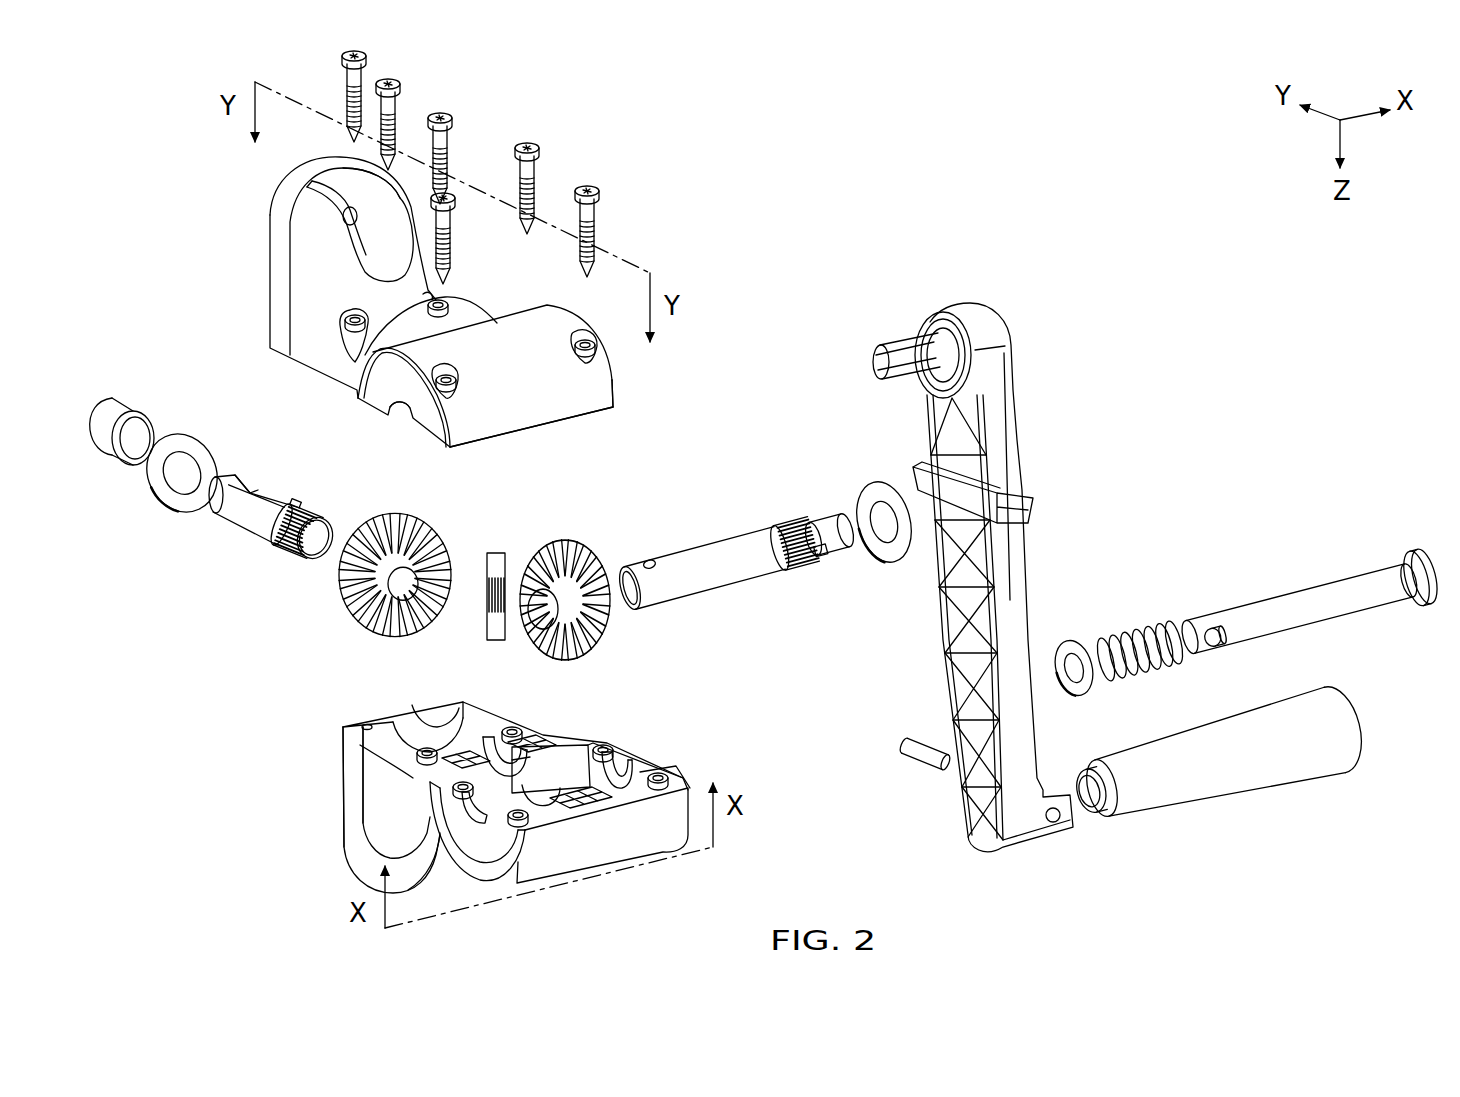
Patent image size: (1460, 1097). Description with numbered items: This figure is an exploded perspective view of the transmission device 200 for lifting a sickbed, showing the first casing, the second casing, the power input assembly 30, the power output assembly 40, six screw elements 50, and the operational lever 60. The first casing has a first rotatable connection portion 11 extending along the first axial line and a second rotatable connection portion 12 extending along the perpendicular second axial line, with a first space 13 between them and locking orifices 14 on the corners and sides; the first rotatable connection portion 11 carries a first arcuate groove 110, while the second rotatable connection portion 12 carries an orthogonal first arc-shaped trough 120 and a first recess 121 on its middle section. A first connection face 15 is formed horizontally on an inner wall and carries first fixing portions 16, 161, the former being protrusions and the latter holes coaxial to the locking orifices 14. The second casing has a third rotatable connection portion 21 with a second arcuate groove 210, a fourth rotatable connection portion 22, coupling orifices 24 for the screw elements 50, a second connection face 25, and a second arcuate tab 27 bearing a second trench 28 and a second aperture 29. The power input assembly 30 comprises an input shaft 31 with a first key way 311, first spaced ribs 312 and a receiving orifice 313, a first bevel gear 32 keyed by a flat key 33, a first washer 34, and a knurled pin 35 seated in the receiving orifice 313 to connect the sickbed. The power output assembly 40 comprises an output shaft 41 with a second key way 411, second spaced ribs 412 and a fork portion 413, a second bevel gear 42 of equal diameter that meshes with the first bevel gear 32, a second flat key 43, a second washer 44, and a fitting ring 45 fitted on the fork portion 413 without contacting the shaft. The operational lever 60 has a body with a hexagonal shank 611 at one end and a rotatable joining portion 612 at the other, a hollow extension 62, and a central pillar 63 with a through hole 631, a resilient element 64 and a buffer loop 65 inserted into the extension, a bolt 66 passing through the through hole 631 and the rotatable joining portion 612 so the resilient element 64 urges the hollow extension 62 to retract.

The transmission device 200 is at (750, 283).
The screw elements 50 is at (550, 162).
The fourth rotatable connection portion 22 is at (417, 333).
The second trench 28 is at (323, 232).
The second arcuate tab 27 is at (367, 257).
The second aperture 29 is at (347, 180).
The third rotatable connection portion 21 is at (540, 330).
The coupling orifices 24 is at (612, 383).
The second connection face 25 is at (570, 420).
The second arcuate groove 210 is at (413, 414).
The power output assembly 40 is at (205, 576).
The fitting ring 45 is at (128, 405).
The second washer 44 is at (187, 440).
The output shaft 41 is at (232, 514).
The fork portion 413 is at (250, 483).
The second flat key 43 is at (300, 507).
The second spaced ribs 412 is at (280, 553).
The second key way 411 is at (270, 518).
The second bevel gear 42 is at (447, 550).
The knurled pin 35 is at (502, 555).
The power input assembly 30 is at (738, 593).
The first bevel gear 32 is at (577, 540).
The input shaft 31 is at (708, 550).
The receiving orifice 313 is at (650, 560).
The first spaced ribs 312 is at (782, 520).
The first key way 311 is at (837, 510).
The flat key 33 is at (817, 567).
The first washer 34 is at (893, 557).
The first rotatable connection portion 11 is at (614, 838).
The first arcuate groove 110 is at (417, 847).
The second rotatable connection portion 12 is at (420, 790).
The first connection face 15 is at (420, 773).
The first fixing portions 161 is at (360, 725).
The first arc-shaped trough 120 is at (415, 732).
The first recess 121 is at (490, 735).
The first space 13 is at (565, 757).
The locking orifices 14 is at (650, 765).
The first fixing portions 16 is at (656, 777).
The operational lever 60 is at (1040, 455).
The hexagonal shank 611 is at (900, 355).
The rotatable joining portion 612 is at (1054, 822).
The bolt 66 is at (920, 773).
The buffer loop 65 is at (1068, 640).
The resilient element 64 is at (1148, 623).
The central pillar 63 is at (1308, 597).
The through hole 631 is at (1208, 640).
The hollow extension 62 is at (1203, 792).